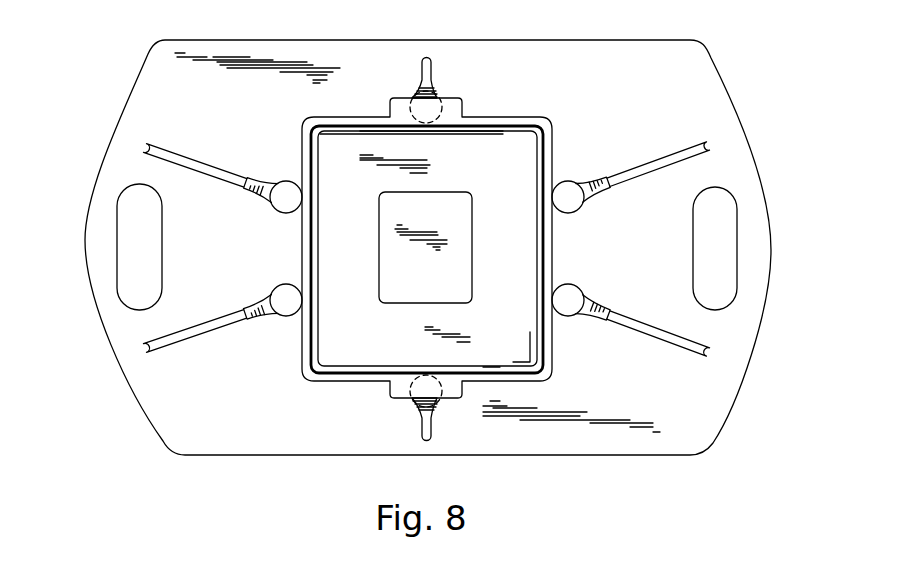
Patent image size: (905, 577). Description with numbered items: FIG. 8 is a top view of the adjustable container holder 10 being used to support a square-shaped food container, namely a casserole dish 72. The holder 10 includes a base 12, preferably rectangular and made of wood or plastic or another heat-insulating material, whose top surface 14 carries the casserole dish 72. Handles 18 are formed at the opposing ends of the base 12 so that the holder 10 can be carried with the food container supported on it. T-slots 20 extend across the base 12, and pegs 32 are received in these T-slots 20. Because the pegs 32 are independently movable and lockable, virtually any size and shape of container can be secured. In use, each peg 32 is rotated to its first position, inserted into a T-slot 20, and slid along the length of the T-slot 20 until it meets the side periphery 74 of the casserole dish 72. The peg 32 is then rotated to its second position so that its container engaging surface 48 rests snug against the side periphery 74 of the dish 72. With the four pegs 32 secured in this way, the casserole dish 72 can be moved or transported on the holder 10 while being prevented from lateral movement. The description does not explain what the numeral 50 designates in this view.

The adjustable container holder 10 is at (275, 461).
The base 12 is at (588, 456).
The top surface 14 is at (553, 89).
The handles 18 is at (88, 241).
The T-slots 20 is at (672, 156).
The pegs 32 is at (279, 214).
The container engaging surfaces 48 is at (304, 193).
The collar 50 is at (593, 194).
The casserole dish 72 is at (459, 172).
The side periphery 74 is at (301, 146).